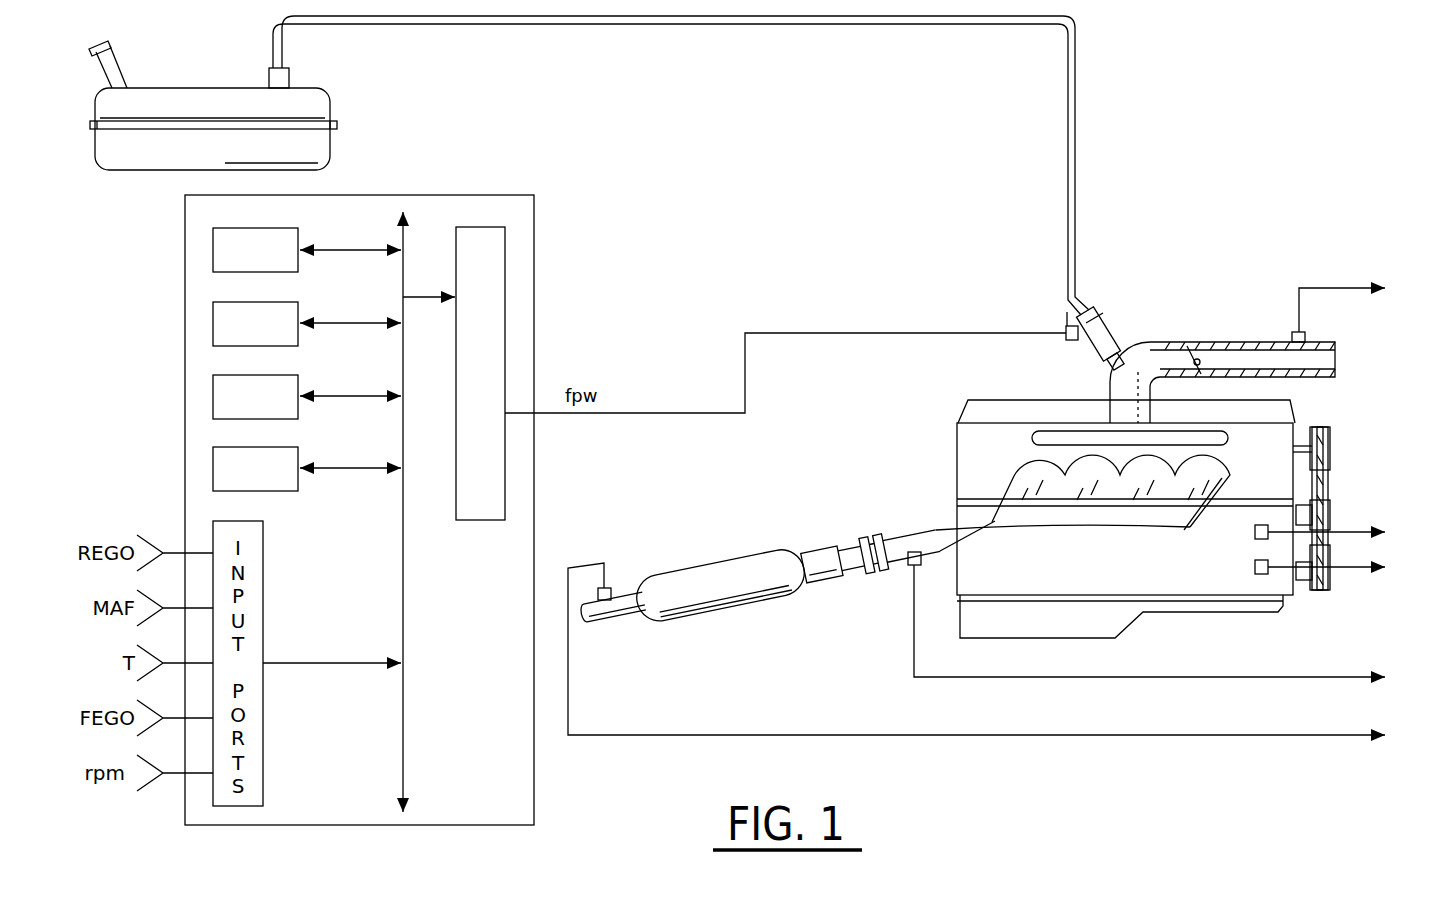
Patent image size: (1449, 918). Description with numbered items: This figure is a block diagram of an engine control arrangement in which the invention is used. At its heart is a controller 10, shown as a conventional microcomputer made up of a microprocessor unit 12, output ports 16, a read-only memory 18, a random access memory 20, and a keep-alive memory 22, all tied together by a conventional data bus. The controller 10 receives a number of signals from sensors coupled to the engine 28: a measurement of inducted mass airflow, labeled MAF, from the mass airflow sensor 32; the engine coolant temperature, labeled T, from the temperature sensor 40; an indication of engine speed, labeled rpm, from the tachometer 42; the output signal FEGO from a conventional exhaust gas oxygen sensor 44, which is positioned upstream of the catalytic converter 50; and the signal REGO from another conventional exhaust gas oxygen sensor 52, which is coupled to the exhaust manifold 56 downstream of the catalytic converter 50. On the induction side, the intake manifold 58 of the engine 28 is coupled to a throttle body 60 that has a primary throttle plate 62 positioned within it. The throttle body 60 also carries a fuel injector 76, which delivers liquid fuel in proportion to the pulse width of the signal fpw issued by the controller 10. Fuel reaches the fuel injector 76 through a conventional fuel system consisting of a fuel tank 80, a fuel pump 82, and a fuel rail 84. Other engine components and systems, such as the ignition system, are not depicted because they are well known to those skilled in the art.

The controller 10 is at (181, 207).
The microprocessor unit 12 is at (213, 250).
The output ports 16 is at (505, 235).
The read-only memory 18 is at (213, 326).
The random access memory 20 is at (213, 393).
The keep-alive memory 22 is at (213, 463).
The engine 28 is at (1365, 456).
The mass airflow sensor 32 is at (1292, 336).
The temperature sensor 40 is at (1255, 533).
The tachometer 42 is at (1253, 567).
The exhaust gas oxygen sensor 44 is at (915, 552).
The catalytic converter 50 is at (783, 553).
The exhaust gas oxygen sensor 52 is at (613, 587).
The exhaust manifold 56 is at (1118, 537).
The intake manifold 58 is at (1000, 400).
The throttle body 60 is at (1130, 340).
The primary throttle plate 62 is at (1192, 345).
The fuel injector 76 is at (1066, 318).
The fuel tank 80 is at (193, 90).
The fuel pump 82 is at (292, 80).
The fuel rail 84 is at (1066, 77).